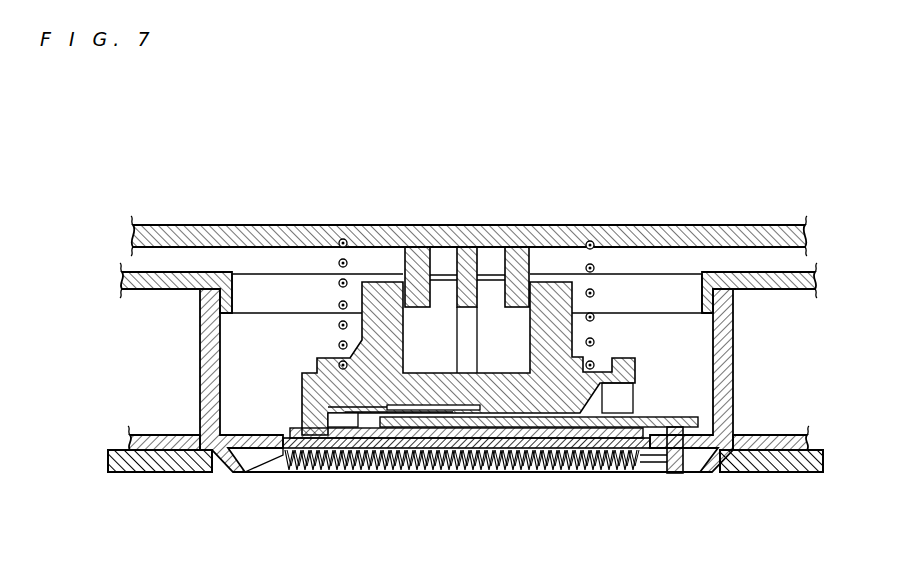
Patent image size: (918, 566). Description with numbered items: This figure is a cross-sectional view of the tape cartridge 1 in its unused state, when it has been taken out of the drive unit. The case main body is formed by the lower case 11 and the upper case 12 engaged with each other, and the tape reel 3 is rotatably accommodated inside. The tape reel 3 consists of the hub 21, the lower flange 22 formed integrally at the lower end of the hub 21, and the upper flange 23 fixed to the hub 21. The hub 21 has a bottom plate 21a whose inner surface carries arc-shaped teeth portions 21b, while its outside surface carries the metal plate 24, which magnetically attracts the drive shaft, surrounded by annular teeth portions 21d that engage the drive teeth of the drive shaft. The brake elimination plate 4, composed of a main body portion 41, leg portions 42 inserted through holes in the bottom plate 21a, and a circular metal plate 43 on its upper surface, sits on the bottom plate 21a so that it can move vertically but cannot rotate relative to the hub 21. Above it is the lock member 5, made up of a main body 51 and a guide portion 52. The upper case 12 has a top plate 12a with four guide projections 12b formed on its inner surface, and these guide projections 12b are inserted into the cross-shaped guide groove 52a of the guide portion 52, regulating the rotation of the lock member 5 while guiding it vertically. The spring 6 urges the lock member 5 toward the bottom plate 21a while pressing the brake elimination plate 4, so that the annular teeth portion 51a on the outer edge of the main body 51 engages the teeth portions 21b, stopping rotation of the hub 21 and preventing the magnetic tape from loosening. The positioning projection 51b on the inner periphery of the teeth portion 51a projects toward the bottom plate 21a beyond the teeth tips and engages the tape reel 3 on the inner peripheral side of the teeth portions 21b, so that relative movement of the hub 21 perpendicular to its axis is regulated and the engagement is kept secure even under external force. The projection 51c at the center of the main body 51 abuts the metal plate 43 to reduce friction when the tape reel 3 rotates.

The tape cartridge 1 is at (447, 158).
The tape reel 3 is at (182, 362).
The brake elimination plate 4 is at (668, 412).
The lock member 5 is at (320, 352).
The spring 6 is at (338, 305).
The lower case 11 is at (170, 474).
The upper case 12 is at (712, 222).
The top plate 12a is at (634, 244).
The guide projections 12b is at (480, 262).
The hub 21 is at (735, 367).
The bottom plate 21a is at (366, 474).
The teeth portions 21b is at (302, 413).
The annular teeth portions 21d is at (432, 474).
The lower flange 22 is at (170, 436).
The upper flange 23 is at (156, 290).
The metal plate 24 is at (482, 474).
The main body portion 41 is at (562, 474).
The leg portions 42 is at (675, 474).
The metal plate 43 is at (500, 474).
The main body 51 is at (636, 378).
The teeth portion 51a is at (292, 386).
The positioning projection 51b is at (302, 390).
The projection 51c is at (463, 410).
The guide portion 52 is at (598, 340).
The guide groove 52a is at (441, 300).